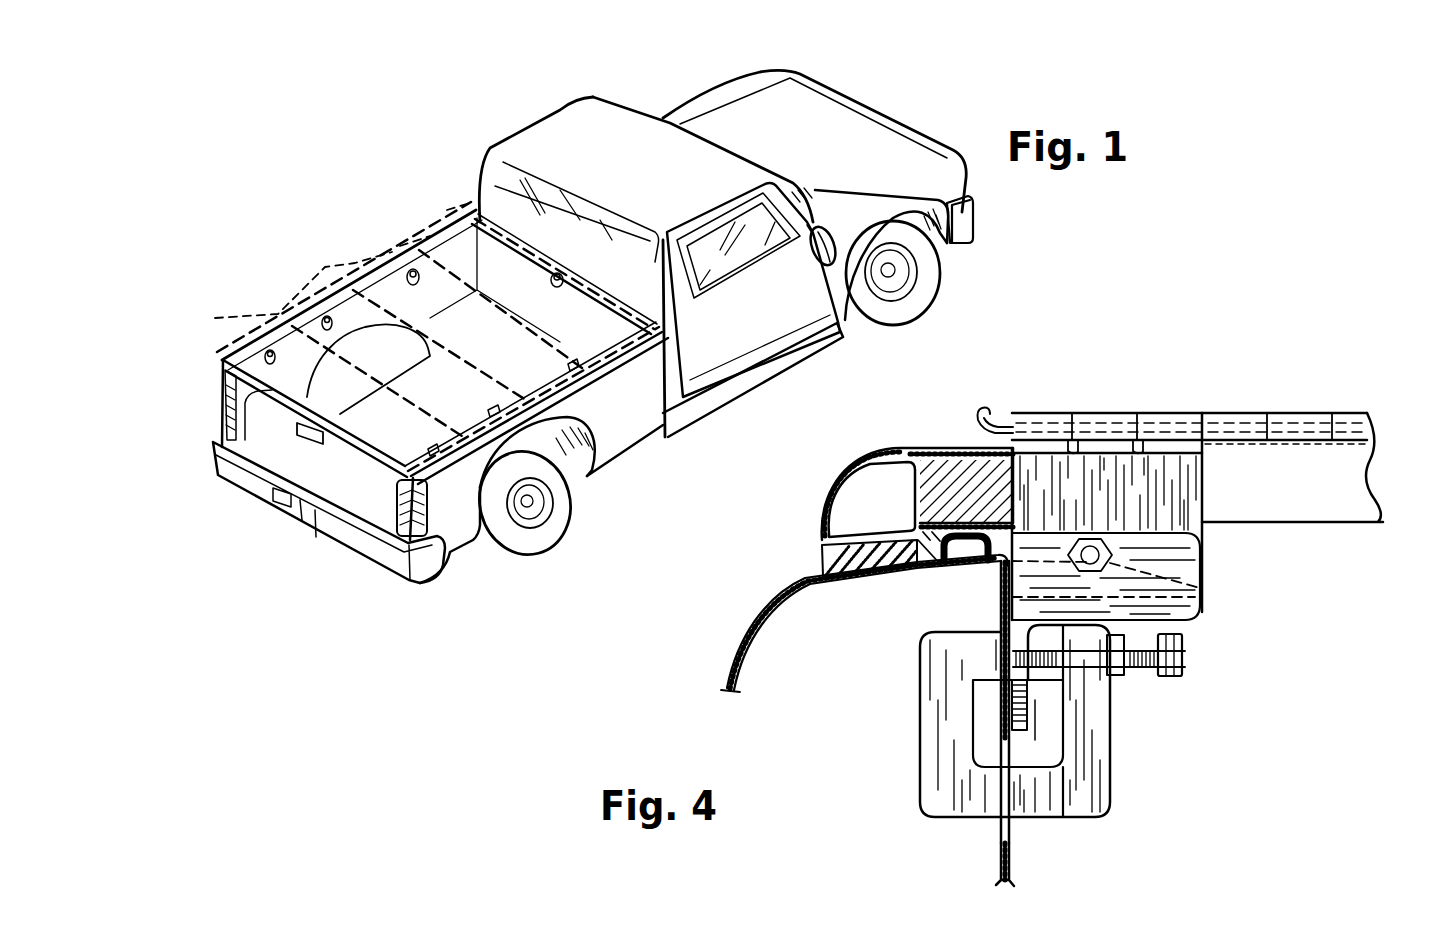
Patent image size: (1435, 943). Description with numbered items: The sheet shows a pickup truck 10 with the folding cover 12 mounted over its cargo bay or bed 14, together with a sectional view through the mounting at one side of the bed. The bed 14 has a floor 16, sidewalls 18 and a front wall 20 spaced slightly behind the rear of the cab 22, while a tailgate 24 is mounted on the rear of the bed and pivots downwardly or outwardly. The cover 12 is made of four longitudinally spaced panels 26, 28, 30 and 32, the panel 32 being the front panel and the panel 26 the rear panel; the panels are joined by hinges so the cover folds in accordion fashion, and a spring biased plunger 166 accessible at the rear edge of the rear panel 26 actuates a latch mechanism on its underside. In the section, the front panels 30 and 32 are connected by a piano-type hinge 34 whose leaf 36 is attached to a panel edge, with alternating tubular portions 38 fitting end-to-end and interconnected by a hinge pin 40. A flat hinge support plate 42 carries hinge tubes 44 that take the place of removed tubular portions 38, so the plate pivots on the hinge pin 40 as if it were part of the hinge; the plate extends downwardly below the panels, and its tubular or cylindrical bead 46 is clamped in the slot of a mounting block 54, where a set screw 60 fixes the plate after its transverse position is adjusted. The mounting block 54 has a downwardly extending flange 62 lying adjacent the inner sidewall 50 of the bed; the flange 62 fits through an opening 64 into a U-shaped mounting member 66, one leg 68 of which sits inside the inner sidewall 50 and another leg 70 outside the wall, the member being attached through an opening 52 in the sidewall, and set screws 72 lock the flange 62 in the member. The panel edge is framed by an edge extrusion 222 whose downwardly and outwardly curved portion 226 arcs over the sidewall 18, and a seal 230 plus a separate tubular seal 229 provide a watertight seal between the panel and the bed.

In FIG. 1, the pickup truck 10 is at (529, 107).
In FIG. 1, the folding cover 12 is at (447, 330).
In FIG. 1, the cargo bay or bed 14 is at (457, 264).
In FIG. 1, the floor 16 is at (390, 303).
In FIG. 1, the sidewalls 18 is at (613, 410).
In FIG. 4, the sidewalls 18 is at (740, 640).
In FIG. 1, the front wall 20 is at (477, 215).
In FIG. 1, the cab 22 is at (565, 148).
In FIG. 1, the tailgate 24 is at (365, 498).
In FIG. 1, the rear panel 26 is at (407, 438).
In FIG. 1, the panel 28 is at (466, 404).
In FIG. 1, the panel 30 is at (516, 362).
In FIG. 1, the front panel 32 is at (579, 330).
In FIG. 1, the spring biased plunger 166 is at (314, 418).
In FIG. 4, the hinge 34 is at (1297, 410).
In FIG. 4, the leaf 36 is at (1357, 512).
In FIG. 4, the tubular portions 38 is at (1103, 412).
In FIG. 4, the hinge pin 40 is at (991, 407).
In FIG. 4, the hinge support plate 42 is at (1190, 493).
In FIG. 4, the hinge tubes 44 is at (1047, 412).
In FIG. 4, the tubular or cylindrical bead 46 is at (1203, 592).
In FIG. 4, the inner sidewall 50 is at (1001, 618).
In FIG. 4, the opening 52 is at (1000, 843).
In FIG. 4, the mounting block 54 is at (1178, 550).
In FIG. 4, the set screw 60 is at (1203, 588).
In FIG. 4, the flange 62 is at (1017, 722).
In FIG. 4, the opening 64 is at (1041, 688).
In FIG. 4, the U-shaped mounting member 66 is at (920, 793).
In FIG. 4, the leg 68 is at (940, 692).
In FIG. 4, the leg 70 is at (1090, 703).
In FIG. 4, the set screws 72 is at (1183, 667).
In FIG. 4, the edge extrusion 222 is at (892, 447).
In FIG. 4, the downwardly and outwardly curved portion 226 is at (864, 463).
In FIG. 4, the tubular seal 229 is at (941, 562).
In FIG. 4, the seal 230 is at (820, 566).